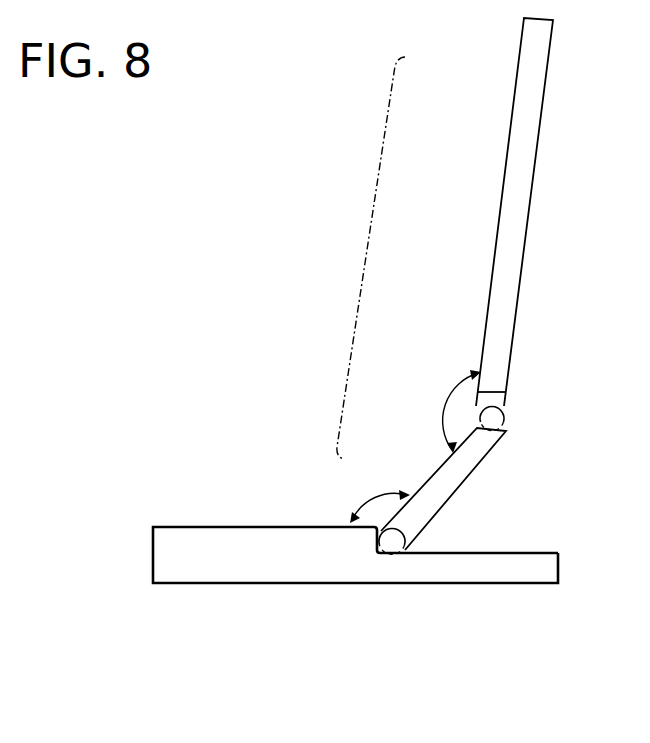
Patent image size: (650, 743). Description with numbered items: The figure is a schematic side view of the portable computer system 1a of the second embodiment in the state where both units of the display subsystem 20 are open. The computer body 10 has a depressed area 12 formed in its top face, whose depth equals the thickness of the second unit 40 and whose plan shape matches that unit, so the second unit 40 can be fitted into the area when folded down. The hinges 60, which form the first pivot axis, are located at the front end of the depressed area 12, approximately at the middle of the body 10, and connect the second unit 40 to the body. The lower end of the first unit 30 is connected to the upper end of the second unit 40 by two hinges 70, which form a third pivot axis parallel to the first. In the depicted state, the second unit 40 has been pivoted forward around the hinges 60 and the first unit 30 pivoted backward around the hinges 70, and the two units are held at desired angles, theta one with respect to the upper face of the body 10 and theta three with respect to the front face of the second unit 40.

The portable computer system 1a is at (172, 487).
The computer body 10 is at (262, 568).
The depressed area 12 is at (520, 547).
The display subsystem 20 is at (363, 250).
The first unit 30 is at (511, 232).
The second unit 40 is at (437, 477).
The hinges 60 is at (391, 557).
The hinges 70 is at (505, 425).